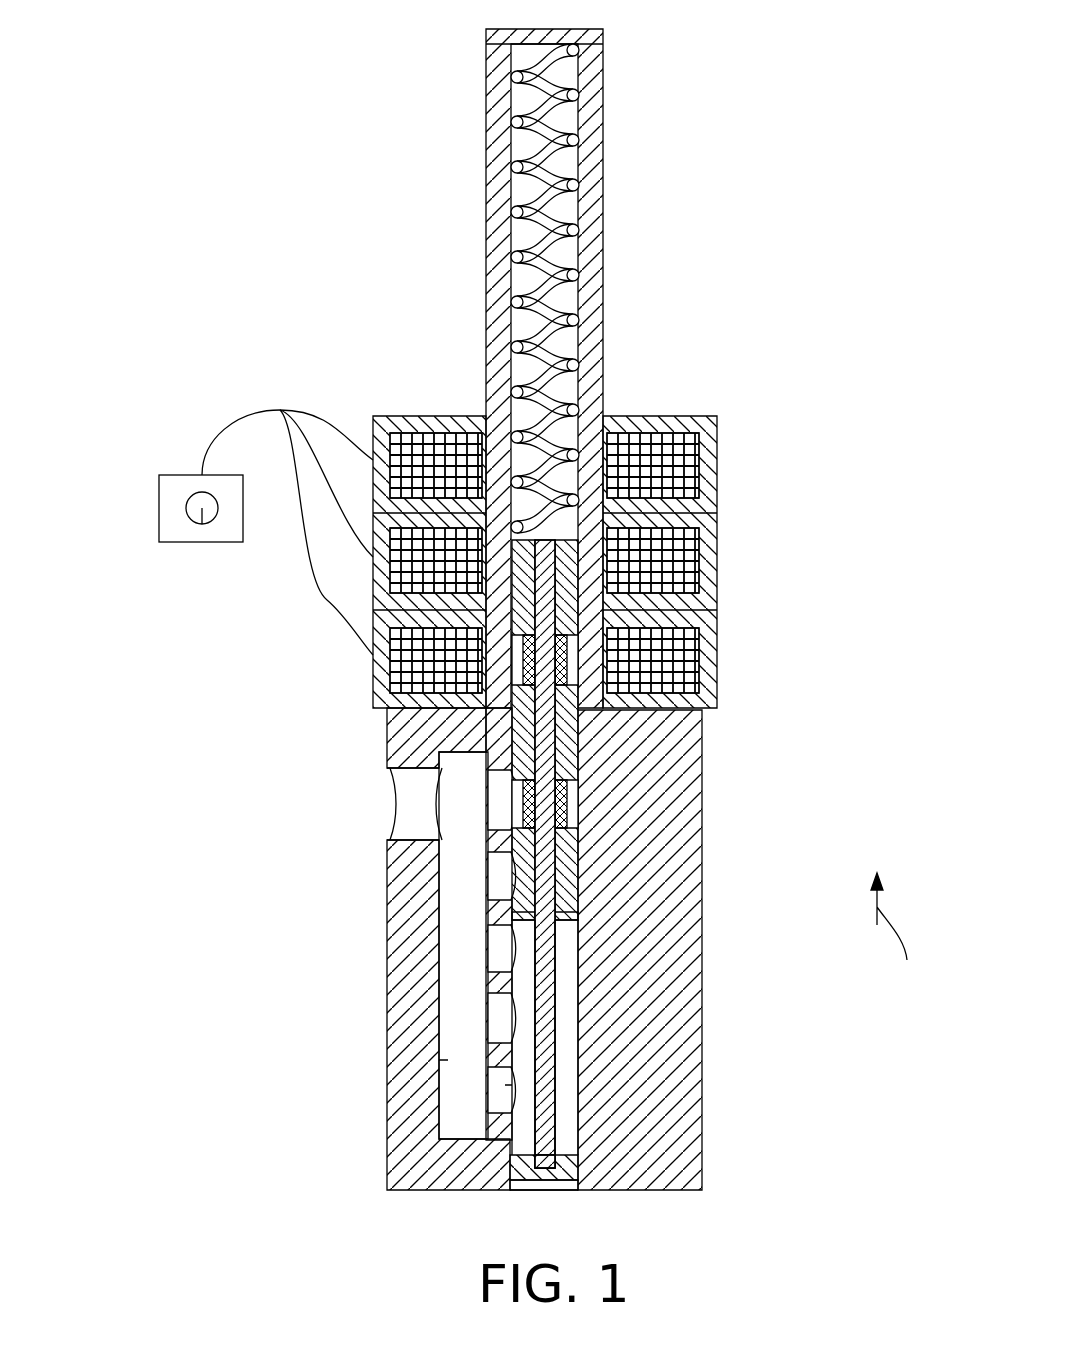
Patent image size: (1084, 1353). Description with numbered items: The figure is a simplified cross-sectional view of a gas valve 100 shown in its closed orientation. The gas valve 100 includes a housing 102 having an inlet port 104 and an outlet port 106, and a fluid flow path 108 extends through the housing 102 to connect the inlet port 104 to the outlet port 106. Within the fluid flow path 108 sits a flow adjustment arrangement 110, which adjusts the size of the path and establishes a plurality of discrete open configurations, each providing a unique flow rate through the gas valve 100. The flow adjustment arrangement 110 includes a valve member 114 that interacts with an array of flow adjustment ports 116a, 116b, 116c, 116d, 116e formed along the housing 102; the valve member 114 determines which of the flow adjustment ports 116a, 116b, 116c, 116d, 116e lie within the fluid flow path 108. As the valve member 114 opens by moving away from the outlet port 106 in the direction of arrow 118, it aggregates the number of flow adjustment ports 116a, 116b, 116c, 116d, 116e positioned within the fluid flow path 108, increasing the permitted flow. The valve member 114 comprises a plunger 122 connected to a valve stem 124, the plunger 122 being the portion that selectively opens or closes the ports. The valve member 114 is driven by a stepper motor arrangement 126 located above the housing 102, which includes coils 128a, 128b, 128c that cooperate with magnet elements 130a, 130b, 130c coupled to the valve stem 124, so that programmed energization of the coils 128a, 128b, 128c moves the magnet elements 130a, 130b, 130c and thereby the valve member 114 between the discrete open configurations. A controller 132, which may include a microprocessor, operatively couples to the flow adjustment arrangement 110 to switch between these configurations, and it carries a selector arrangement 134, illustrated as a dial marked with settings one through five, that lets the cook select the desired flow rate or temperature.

The gas valve 100 is at (247, 133).
The housing 102 is at (400, 978).
The inlet port 104 is at (350, 799).
The outlet port 106 is at (568, 1212).
The fluid flow path 108 is at (512, 1088).
The flow adjustment arrangement 110 is at (566, 1105).
The valve member 114 is at (512, 1140).
The flow adjustment port 116a is at (500, 1090).
The flow adjustment port 116b is at (500, 1015).
The flow adjustment port 116c is at (500, 948).
The flow adjustment port 116d is at (498, 878).
The flow adjustment port 116e is at (498, 800).
The arrow 118 is at (896, 931).
The plunger 122 is at (565, 1160).
The valve stem 124 is at (543, 1025).
The stepper motor arrangement 126 is at (800, 372).
The coil 128a is at (702, 466).
The coil 128b is at (688, 566).
The coil 128c is at (688, 665).
The magnet element 130a is at (580, 567).
The magnet element 130b is at (578, 735).
The magnet element 130c is at (578, 895).
The controller 132 is at (181, 543).
The selector arrangement 134 is at (168, 490).